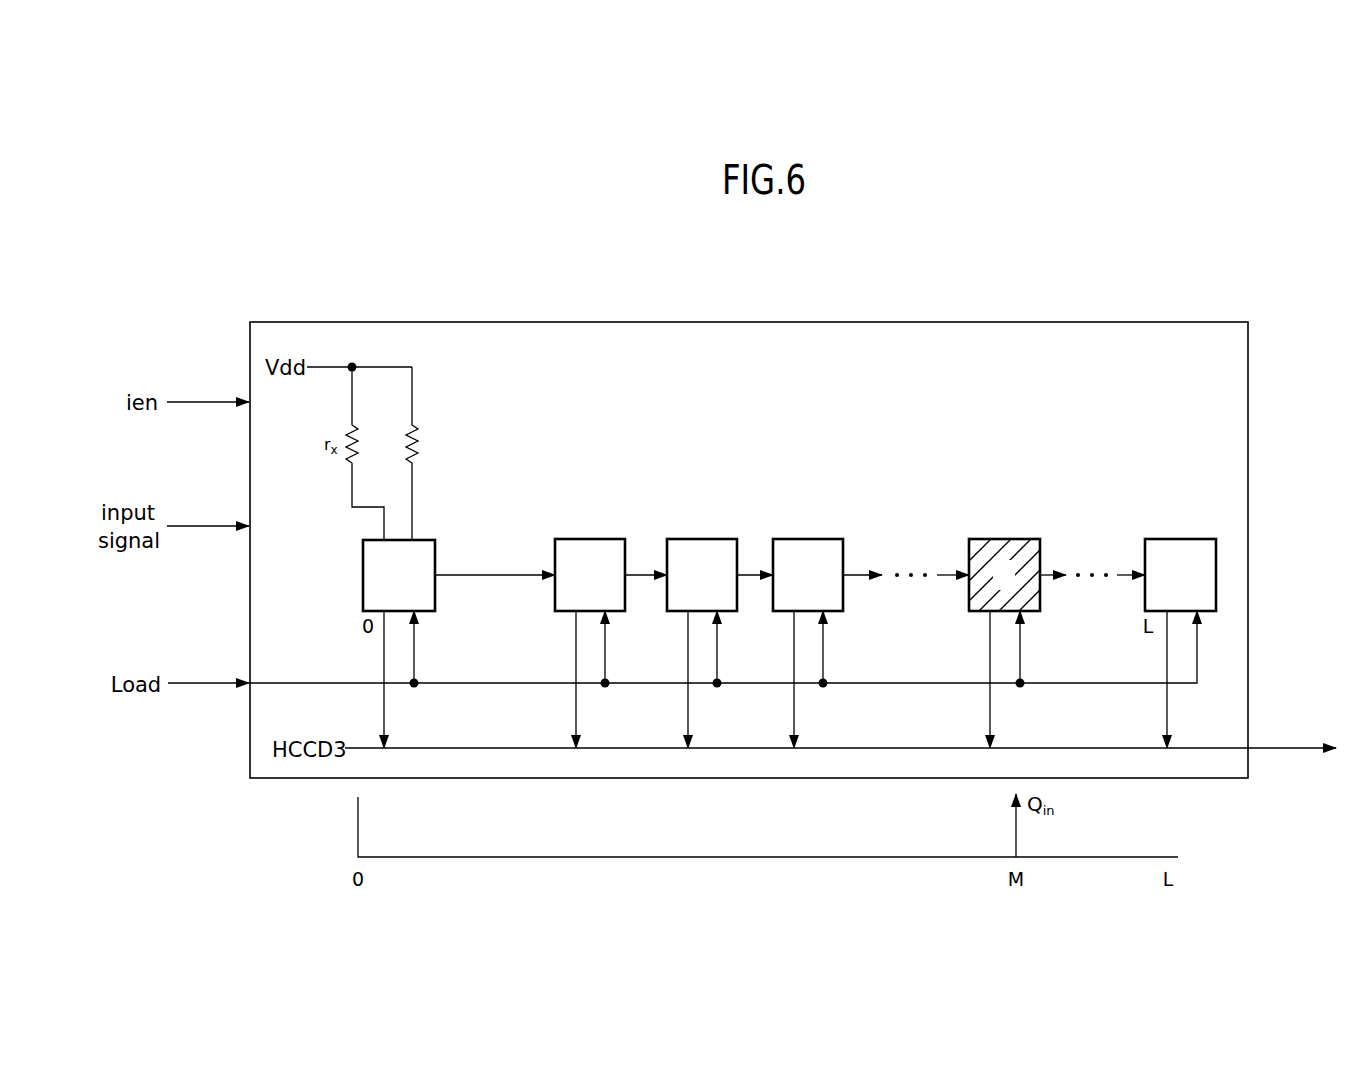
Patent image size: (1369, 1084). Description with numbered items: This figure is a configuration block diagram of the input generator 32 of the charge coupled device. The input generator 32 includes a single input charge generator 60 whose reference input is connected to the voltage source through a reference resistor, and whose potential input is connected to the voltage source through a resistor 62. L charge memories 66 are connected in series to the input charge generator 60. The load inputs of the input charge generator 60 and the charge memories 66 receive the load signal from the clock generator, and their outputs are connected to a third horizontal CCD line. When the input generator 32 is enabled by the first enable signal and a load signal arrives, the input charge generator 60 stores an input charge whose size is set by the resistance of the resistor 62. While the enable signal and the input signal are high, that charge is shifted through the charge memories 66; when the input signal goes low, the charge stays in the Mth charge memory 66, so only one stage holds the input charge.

The input generator 32 is at (745, 322).
The input charge generator 60 is at (363, 575).
The resistor 62 is at (414, 426).
The charge memories 66 is at (592, 548).